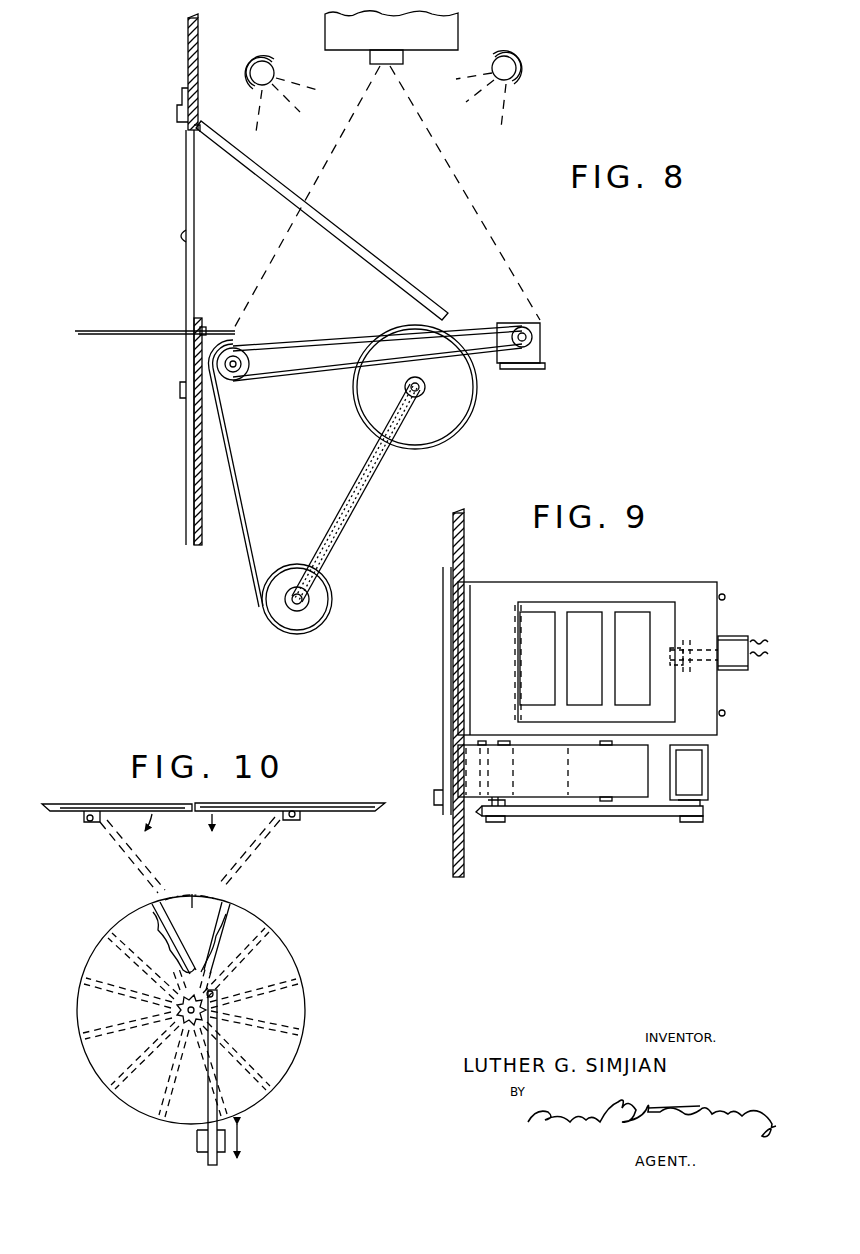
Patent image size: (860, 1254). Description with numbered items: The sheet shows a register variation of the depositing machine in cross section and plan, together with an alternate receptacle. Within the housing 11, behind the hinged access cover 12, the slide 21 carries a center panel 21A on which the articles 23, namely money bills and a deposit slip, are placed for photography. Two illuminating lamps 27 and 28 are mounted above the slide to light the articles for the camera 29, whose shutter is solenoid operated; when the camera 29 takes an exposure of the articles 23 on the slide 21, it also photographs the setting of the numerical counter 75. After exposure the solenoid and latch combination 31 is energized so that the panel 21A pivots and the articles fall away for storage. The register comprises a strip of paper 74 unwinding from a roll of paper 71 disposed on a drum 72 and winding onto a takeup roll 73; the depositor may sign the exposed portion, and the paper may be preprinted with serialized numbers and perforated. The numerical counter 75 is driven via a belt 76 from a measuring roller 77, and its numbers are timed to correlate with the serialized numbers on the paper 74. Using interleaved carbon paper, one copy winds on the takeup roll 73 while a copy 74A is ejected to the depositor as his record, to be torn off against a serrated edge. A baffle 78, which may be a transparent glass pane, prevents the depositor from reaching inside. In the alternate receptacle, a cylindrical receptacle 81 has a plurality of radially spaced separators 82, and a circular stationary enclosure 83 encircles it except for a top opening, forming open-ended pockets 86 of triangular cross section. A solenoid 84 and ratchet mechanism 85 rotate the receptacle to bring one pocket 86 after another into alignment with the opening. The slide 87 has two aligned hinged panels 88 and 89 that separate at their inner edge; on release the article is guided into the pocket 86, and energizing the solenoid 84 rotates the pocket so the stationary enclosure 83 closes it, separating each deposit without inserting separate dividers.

In FIG. 8, the housing 11 is at (188, 68).
In FIG. 8, the hinged access cover 12 is at (186, 160).
In FIG. 9, the hinged access cover 12 is at (443, 628).
In FIG. 9, the slide 21 is at (580, 588).
In FIG. 9, the center panel 21A is at (658, 606).
In FIG. 9, the articles 23 is at (548, 672).
In FIG. 8, the illuminating lamp 27 is at (515, 60).
In FIG. 8, the illuminating lamp 28 is at (262, 60).
In FIG. 8, the camera 29 is at (445, 30).
In FIG. 9, the solenoid and latch combination 31 is at (728, 672).
In FIG. 8, the roll of paper 71 is at (440, 438).
In FIG. 8, the drum 72 is at (456, 395).
In FIG. 8, the takeup roll 73 is at (305, 612).
In FIG. 8, the strip of paper 74 is at (286, 336).
In FIG. 9, the strip of paper 74 is at (541, 800).
In FIG. 8, the paper copy 74A is at (128, 336).
In FIG. 8, the numerical counter 75 is at (540, 334).
In FIG. 9, the numerical counter 75 is at (704, 768).
In FIG. 8, the belt 76 is at (298, 372).
In FIG. 9, the belt 76 is at (614, 814).
In FIG. 8, the measuring roller 77 is at (240, 378).
In FIG. 9, the measuring roller 77 is at (494, 822).
In FIG. 8, the baffle 78 is at (340, 236).
In FIG. 10, the cylindrical receptacle 81 is at (266, 900).
In FIG. 10, the separators 82 is at (280, 942).
In FIG. 10, the stationary enclosure 83 is at (82, 1032).
In FIG. 10, the solenoid 84 is at (196, 1140).
In FIG. 10, the ratchet mechanism 85 is at (180, 1022).
In FIG. 10, the pocket 86 is at (192, 894).
In FIG. 10, the slide 87 is at (328, 802).
In FIG. 10, the hinged panel 88 is at (252, 855).
In FIG. 10, the hinged panel 89 is at (128, 860).